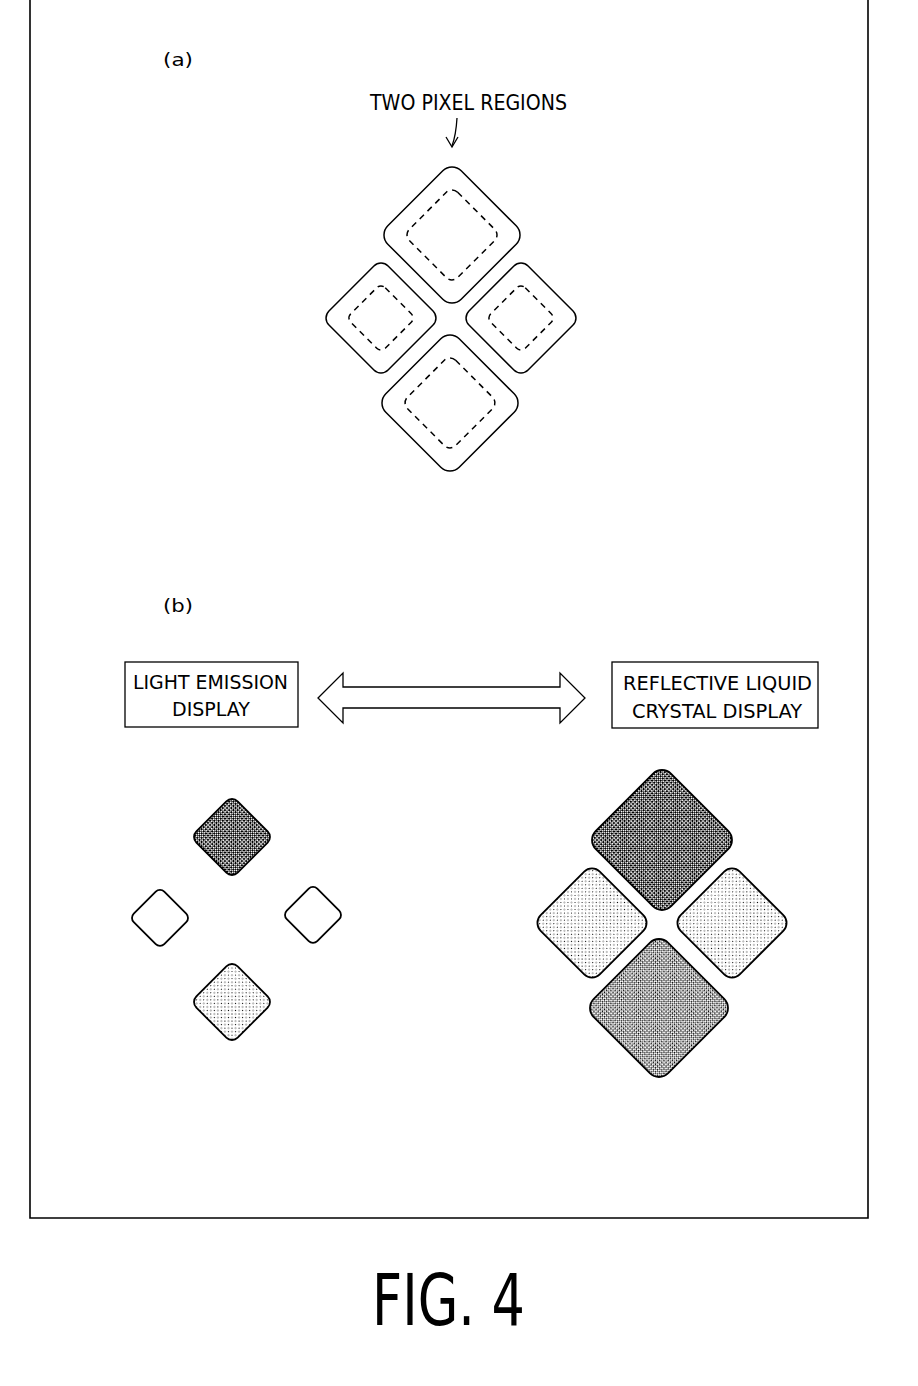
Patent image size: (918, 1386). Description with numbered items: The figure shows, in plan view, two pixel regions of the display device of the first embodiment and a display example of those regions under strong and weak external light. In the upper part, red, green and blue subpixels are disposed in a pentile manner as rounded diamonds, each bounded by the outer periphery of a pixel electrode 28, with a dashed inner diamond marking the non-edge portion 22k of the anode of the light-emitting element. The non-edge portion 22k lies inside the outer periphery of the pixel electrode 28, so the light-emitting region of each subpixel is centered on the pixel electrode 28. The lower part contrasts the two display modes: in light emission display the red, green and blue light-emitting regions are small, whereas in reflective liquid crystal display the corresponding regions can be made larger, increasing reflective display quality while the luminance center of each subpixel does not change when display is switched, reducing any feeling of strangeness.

The non-edge portion 22k is at (473, 210).
The pixel electrode 28 is at (463, 316).